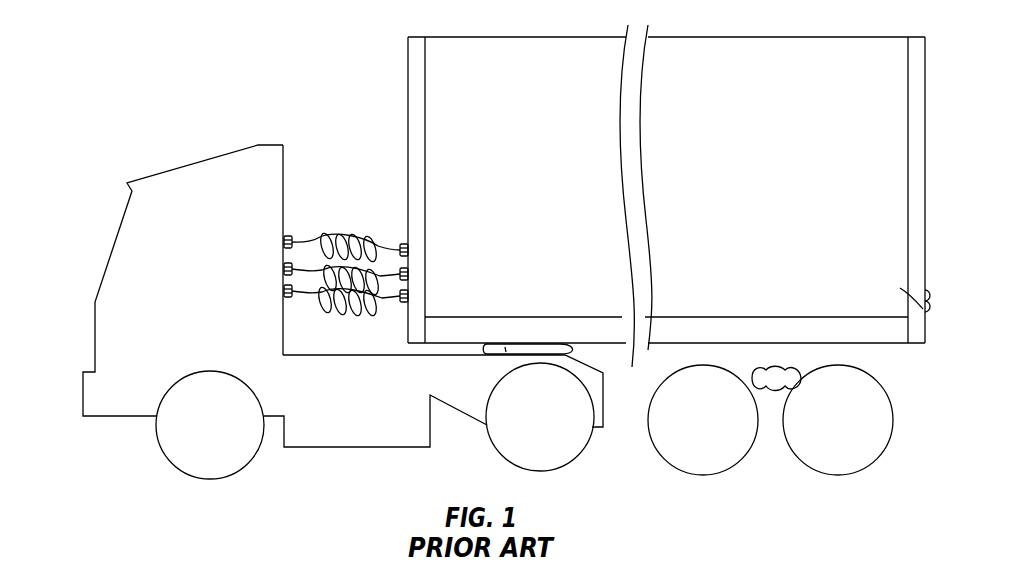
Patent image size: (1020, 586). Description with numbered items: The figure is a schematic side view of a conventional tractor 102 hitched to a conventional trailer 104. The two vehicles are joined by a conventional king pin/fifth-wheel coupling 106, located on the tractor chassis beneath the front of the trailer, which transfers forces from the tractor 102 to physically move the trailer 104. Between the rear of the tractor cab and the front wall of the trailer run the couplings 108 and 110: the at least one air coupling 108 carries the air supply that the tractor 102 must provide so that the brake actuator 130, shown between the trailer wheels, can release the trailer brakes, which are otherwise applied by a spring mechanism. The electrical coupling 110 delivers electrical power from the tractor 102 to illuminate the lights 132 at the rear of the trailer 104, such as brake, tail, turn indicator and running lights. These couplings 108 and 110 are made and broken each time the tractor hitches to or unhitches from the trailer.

The tractor 102 is at (105, 302).
The trailer 104 is at (421, 60).
The king pin/fifth-wheel coupling 106 is at (492, 366).
The air coupling 108 is at (408, 299).
The electrical coupling 110 is at (404, 247).
The brake actuator 130 is at (790, 367).
The lights 132 is at (920, 295).